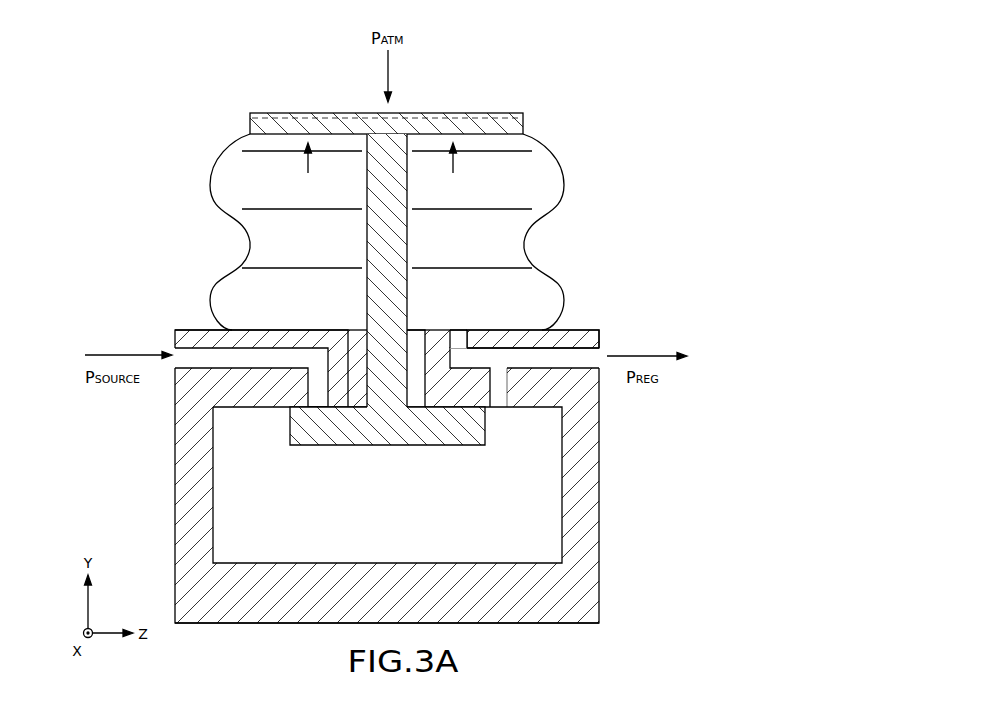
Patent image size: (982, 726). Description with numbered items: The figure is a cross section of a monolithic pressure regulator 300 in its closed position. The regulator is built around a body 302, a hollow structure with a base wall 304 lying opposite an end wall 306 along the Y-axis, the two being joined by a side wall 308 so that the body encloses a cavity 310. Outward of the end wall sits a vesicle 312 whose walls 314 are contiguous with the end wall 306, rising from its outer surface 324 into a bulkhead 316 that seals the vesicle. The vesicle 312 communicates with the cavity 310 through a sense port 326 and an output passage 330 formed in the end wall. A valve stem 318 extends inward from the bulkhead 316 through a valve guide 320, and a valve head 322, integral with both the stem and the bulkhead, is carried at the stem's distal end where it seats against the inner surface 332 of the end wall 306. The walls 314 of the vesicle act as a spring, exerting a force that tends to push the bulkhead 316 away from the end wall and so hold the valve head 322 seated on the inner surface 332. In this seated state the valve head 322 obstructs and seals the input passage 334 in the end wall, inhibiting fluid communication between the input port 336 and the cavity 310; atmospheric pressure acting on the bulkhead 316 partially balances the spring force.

The monolithic pressure regulator 300 is at (601, 44).
The body 302 is at (662, 295).
The base wall 304 is at (522, 613).
The end wall 306 is at (572, 337).
The side wall 308 is at (593, 480).
The cavity 310 is at (496, 463).
The vesicle 312 is at (576, 146).
The walls of vesicle 314 is at (565, 188).
The bulkhead 316 is at (487, 122).
The valve stem 318 is at (393, 235).
The valve guide 320 is at (417, 333).
The valve head 322 is at (398, 435).
The outer surface of end wall 324 is at (208, 328).
The sense port 326 is at (475, 318).
The output passage 330 is at (577, 355).
The inner surface of end wall 332 is at (258, 407).
The input passage 334 is at (298, 358).
The input port 336 is at (172, 352).